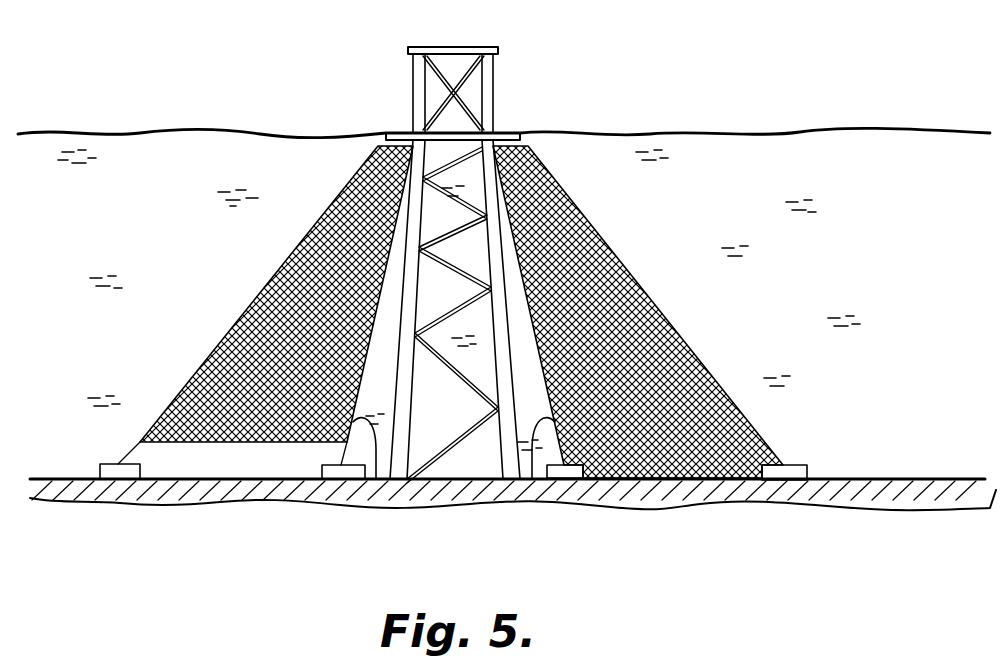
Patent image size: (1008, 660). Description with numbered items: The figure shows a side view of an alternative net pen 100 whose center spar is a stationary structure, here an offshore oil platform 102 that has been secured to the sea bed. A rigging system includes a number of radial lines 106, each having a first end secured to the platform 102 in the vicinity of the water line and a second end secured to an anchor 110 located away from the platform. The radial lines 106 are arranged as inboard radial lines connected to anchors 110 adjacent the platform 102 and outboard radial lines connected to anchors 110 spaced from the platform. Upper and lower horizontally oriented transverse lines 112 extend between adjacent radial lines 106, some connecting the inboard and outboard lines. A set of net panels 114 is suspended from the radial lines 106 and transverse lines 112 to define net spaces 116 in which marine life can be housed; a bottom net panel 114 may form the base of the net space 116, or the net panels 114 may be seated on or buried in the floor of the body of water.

The net pen 100 is at (546, 96).
The offshore oil platform 102 is at (497, 67).
The radial line 106 is at (196, 368).
The anchor 110 is at (102, 463).
The transverse line 112 is at (386, 143).
The net panel 114 is at (320, 263).
The net space 116 is at (310, 317).